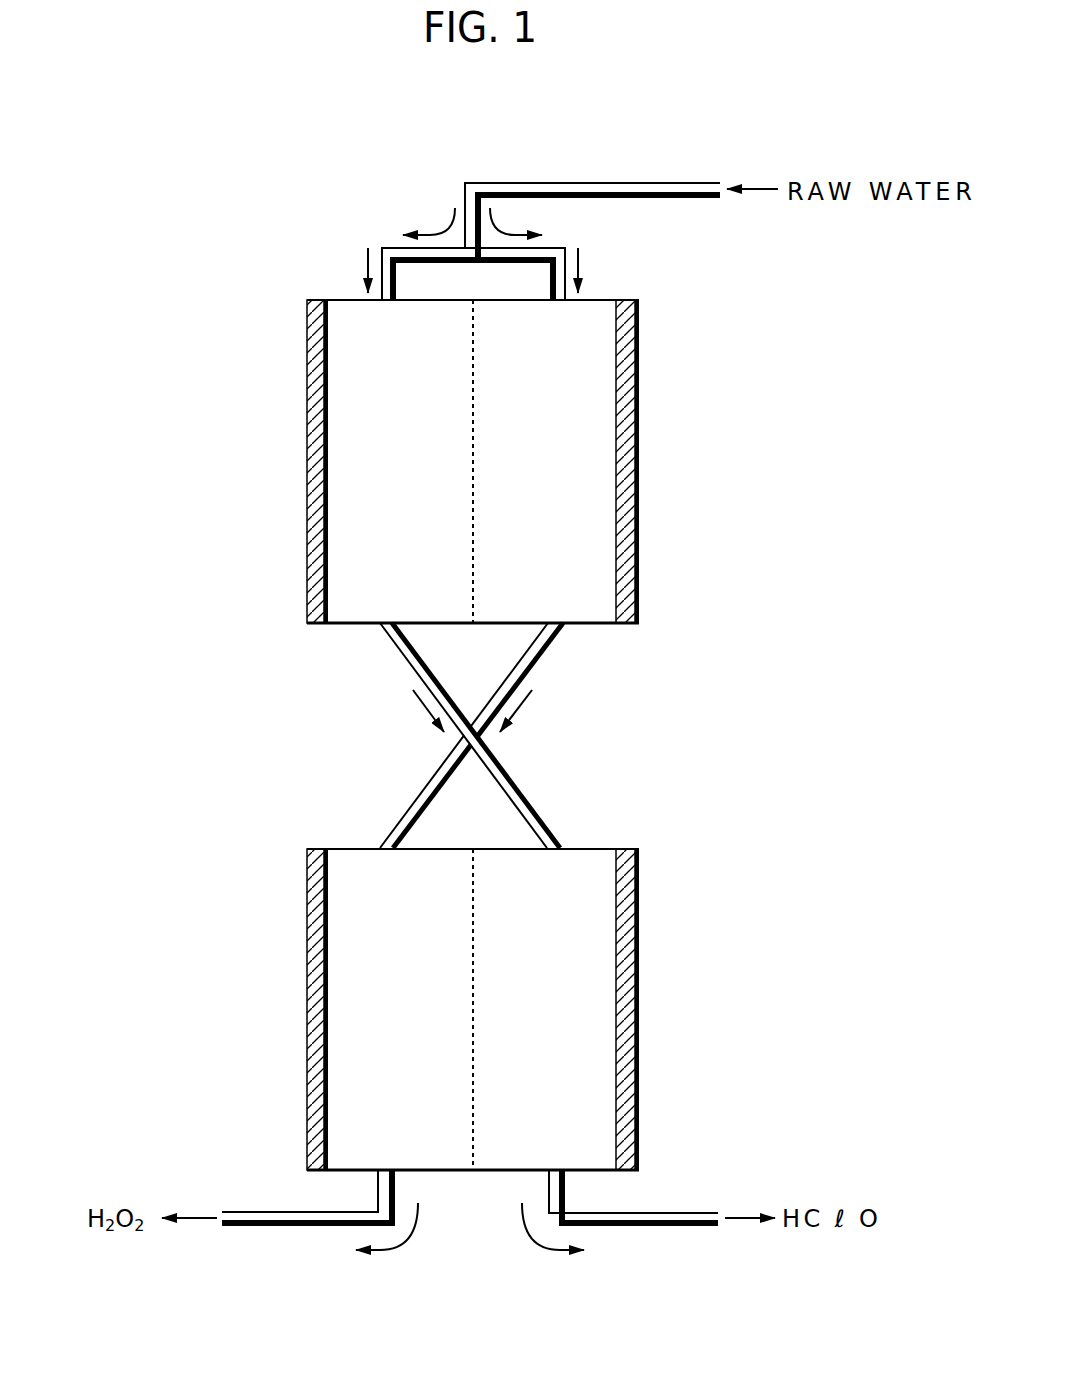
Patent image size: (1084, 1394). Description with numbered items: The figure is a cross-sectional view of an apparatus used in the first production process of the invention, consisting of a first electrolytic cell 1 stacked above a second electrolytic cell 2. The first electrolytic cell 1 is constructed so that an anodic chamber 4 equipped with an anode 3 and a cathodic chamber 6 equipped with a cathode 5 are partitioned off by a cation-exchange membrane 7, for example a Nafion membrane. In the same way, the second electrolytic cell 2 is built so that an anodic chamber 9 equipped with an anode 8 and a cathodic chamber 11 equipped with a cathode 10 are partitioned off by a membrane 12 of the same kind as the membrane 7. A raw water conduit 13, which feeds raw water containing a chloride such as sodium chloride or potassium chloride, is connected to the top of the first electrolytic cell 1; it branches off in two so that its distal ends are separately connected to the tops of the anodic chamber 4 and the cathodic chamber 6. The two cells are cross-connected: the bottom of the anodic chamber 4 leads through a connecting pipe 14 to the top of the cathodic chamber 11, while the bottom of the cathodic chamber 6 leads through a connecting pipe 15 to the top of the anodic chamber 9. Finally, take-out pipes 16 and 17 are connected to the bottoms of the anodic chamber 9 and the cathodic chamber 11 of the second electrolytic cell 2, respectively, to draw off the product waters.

The first electrolytic cell 1 is at (697, 352).
The second electrolytic cell 2 is at (695, 899).
The anode 3 is at (307, 509).
The anodic chamber 4 is at (355, 564).
The cathode 5 is at (640, 512).
The cathodic chamber 6 is at (595, 575).
The cation-exchange membrane 7 is at (474, 462).
The anode 8 is at (307, 1046).
The anodic chamber 9 is at (350, 1106).
The cathode 10 is at (637, 1058).
The cathodic chamber 11 is at (595, 1118).
The membrane 12 is at (474, 1010).
The raw water conduit 13 is at (580, 183).
The connecting pipe 14 is at (540, 812).
The connecting pipe 15 is at (543, 658).
The take-out pipe 16 is at (297, 1228).
The take-out pipe 17 is at (632, 1228).